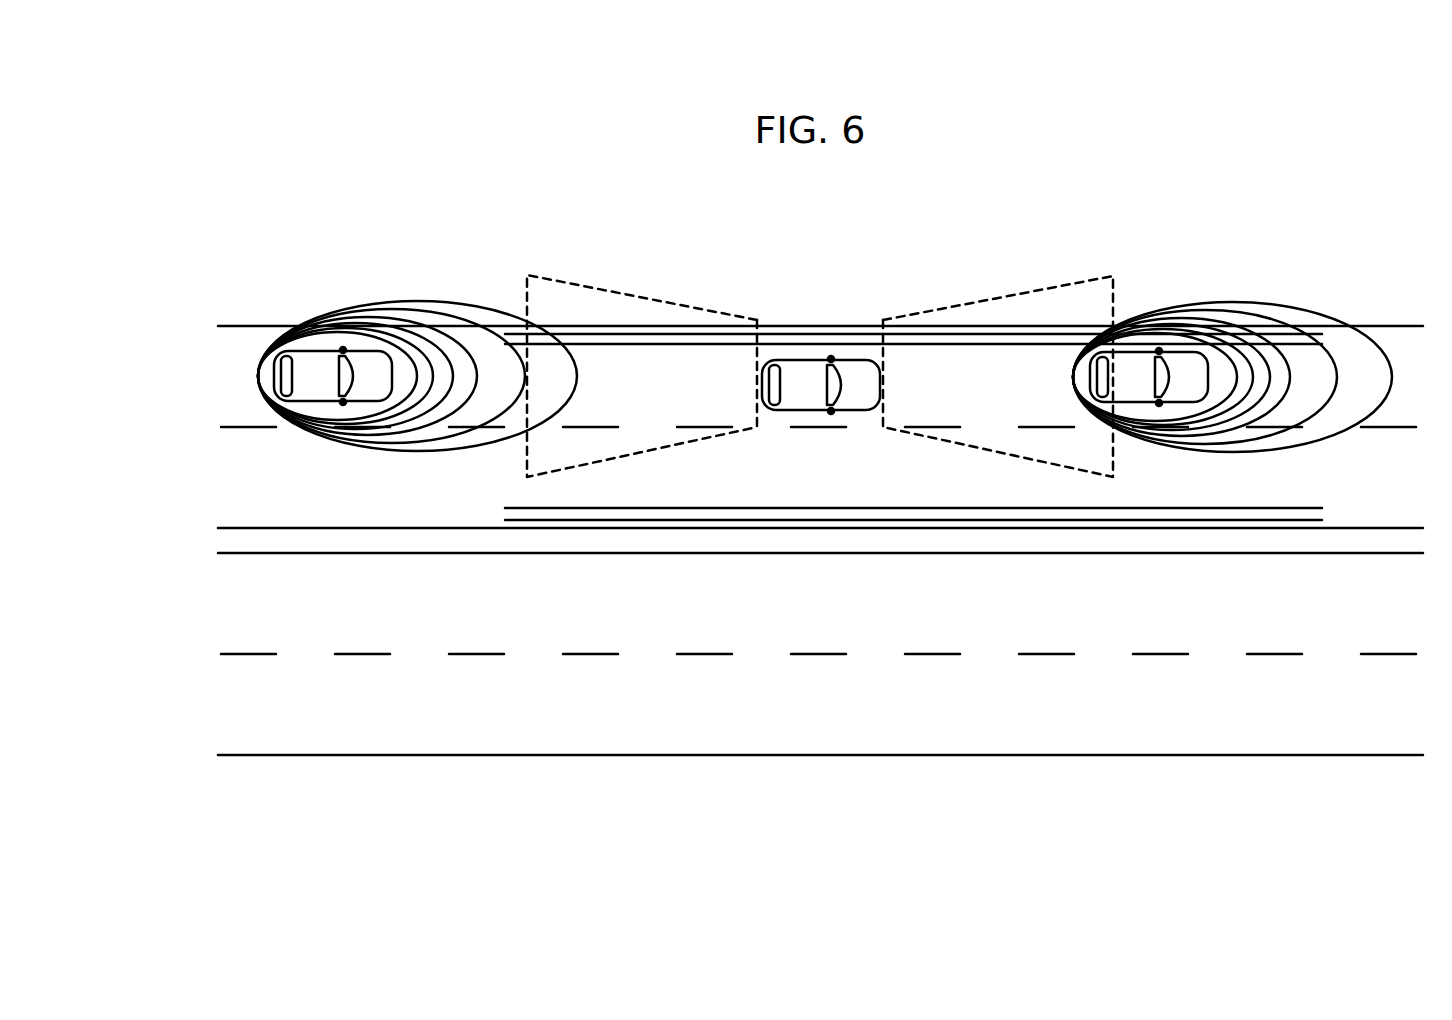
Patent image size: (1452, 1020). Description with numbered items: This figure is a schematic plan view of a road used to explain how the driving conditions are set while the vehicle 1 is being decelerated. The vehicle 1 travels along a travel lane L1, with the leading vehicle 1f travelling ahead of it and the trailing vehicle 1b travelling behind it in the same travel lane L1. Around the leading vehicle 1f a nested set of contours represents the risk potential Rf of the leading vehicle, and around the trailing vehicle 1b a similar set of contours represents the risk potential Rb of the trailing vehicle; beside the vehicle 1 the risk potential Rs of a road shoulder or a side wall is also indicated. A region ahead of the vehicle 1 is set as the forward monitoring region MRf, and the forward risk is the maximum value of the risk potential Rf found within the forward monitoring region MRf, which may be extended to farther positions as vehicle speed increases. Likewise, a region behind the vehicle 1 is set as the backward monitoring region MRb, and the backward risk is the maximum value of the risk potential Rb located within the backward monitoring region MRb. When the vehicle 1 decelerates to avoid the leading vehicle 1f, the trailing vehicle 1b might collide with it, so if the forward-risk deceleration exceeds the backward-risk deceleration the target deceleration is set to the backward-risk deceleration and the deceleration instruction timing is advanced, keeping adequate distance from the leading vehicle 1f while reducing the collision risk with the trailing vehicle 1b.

The vehicle 1 is at (806, 368).
The trailing vehicle 1b is at (313, 367).
The leading vehicle 1f is at (1130, 366).
The risk potential of the trailing vehicle Rb is at (463, 294).
The risk potential of the leading vehicle Rf is at (1310, 301).
The backward monitoring region MRb is at (668, 293).
The forward monitoring region MRf is at (985, 293).
The risk potential of a road shoulder or side wall Rs is at (862, 324).
The travel lane L1 is at (243, 402).